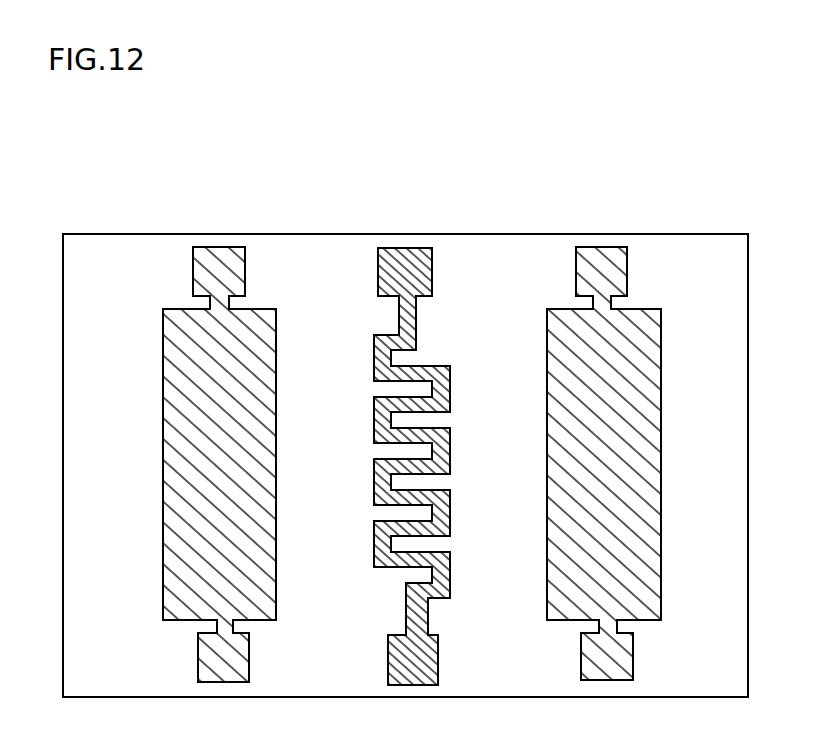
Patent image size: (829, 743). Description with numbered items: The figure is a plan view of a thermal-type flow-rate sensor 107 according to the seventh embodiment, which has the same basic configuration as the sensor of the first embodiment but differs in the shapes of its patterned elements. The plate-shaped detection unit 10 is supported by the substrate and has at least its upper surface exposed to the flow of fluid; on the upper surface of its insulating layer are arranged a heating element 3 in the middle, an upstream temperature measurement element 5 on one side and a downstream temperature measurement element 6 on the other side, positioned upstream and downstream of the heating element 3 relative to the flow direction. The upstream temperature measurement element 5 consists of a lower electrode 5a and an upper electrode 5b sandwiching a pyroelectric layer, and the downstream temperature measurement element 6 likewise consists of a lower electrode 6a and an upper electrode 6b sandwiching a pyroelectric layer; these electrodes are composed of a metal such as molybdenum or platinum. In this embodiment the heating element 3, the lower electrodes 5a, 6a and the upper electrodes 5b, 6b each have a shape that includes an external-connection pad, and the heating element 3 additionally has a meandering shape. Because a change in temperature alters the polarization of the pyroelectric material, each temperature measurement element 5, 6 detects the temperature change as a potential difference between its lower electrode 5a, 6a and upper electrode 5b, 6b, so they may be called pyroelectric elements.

The thermal-type flow-rate sensor 107 is at (700, 148).
The detection unit 10 is at (230, 155).
The heating element 3 is at (404, 234).
The upstream temperature measurement element 5 is at (200, 201).
The lower electrode 5a is at (245, 655).
The upper electrode 5b is at (219, 250).
The downstream temperature measurement element 6 is at (680, 201).
The lower electrode 6a is at (627, 655).
The upper electrode 6b is at (599, 250).